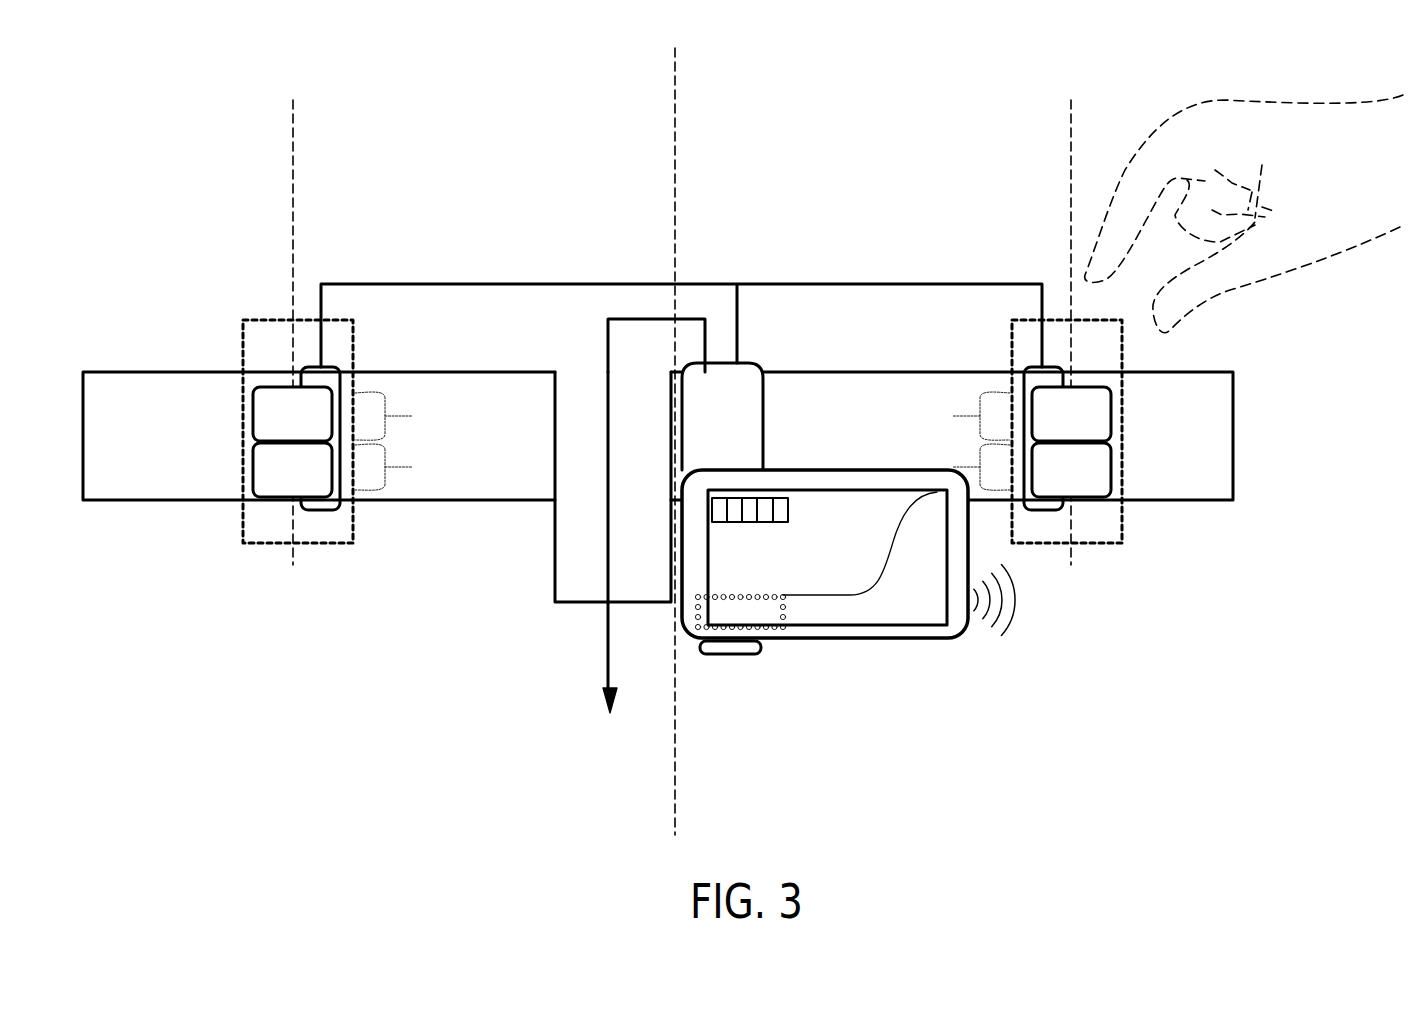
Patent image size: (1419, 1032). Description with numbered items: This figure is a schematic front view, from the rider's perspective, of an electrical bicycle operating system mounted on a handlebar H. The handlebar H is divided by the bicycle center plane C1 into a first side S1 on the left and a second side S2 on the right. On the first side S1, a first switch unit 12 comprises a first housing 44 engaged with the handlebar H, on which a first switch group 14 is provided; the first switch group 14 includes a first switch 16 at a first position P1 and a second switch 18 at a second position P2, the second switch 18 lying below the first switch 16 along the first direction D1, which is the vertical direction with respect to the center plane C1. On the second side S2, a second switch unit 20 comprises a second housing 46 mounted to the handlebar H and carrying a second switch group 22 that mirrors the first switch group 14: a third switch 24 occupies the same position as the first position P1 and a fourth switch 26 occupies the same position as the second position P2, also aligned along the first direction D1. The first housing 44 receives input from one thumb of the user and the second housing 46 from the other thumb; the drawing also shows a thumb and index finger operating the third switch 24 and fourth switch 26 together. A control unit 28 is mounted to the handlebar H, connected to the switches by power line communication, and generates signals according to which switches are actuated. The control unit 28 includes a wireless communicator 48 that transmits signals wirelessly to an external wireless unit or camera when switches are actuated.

The first switch unit 12 is at (293, 458).
The first switch group 14 is at (243, 518).
The first switch 16 is at (292, 414).
The second switch 18 is at (292, 470).
The second switch unit 20 is at (1075, 458).
The second switch group 22 is at (1122, 518).
The third switch 24 is at (1071, 414).
The fourth switch 26 is at (1071, 470).
The control unit 28 is at (820, 640).
The first housing 44 is at (330, 367).
The second housing 46 is at (1036, 367).
The wireless communicator 48 is at (975, 618).
The handlebar H is at (163, 372).
The first position P1 is at (682, 416).
The second position P2 is at (682, 467).
The first direction D1 is at (293, 145).
The first side S1 is at (389, 168).
The second side S2 is at (961, 168).
The center plane C1 is at (658, 433).